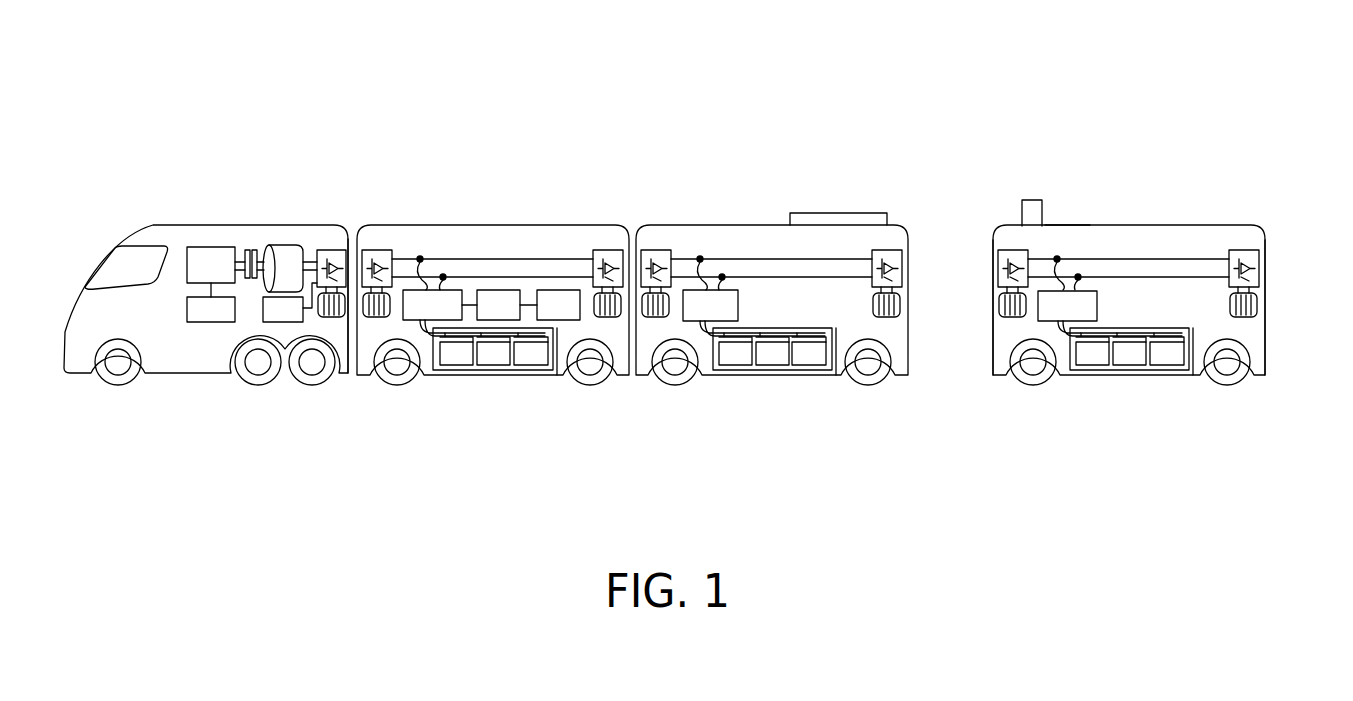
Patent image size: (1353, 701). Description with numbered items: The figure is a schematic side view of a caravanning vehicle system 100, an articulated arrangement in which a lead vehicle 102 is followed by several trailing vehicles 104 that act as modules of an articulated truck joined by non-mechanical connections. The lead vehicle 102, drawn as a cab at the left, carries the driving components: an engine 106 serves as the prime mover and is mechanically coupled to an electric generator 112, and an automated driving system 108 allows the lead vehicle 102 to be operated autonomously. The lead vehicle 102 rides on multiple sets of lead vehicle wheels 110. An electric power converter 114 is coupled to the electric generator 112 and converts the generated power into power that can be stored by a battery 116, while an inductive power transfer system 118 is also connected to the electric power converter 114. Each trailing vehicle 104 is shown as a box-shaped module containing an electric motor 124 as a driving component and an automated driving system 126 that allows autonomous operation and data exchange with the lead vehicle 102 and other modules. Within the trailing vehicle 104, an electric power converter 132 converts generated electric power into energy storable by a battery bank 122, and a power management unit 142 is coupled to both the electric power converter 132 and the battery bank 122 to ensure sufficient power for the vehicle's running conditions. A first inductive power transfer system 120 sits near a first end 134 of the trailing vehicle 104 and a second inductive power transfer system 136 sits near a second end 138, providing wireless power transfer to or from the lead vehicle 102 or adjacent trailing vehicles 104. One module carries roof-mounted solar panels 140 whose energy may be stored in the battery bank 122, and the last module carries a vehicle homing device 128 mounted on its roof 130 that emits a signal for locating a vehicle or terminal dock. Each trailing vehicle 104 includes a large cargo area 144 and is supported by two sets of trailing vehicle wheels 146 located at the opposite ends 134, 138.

The caravanning vehicle system 100 is at (88, 70).
The lead vehicle 102 is at (173, 225).
The trailing vehicle 104 is at (481, 225).
The engine 106 is at (213, 258).
The automated driving system 108 is at (200, 322).
The lead vehicle wheels 110 is at (120, 386).
The electric generator 112 is at (285, 245).
The electric power converter 114 is at (337, 250).
The battery 116 is at (280, 312).
The inductive power transfer system 118 is at (327, 316).
The first inductive power transfer system 120 is at (380, 316).
The battery bank 122 is at (482, 370).
The electric motor 124 is at (512, 300).
The automated driving system 126 is at (555, 300).
The vehicle homing device 128 is at (1032, 200).
The roof 130 is at (1067, 226).
The electric power converter 132 is at (376, 250).
The first end 134 is at (982, 222).
The second inductive power transfer system 136 is at (1259, 304).
The second end 138 is at (1281, 225).
The roof-mounted solar panels 140 is at (829, 213).
The power management unit 142 is at (432, 298).
The cargo area 144 is at (1128, 308).
The trailing vehicle wheels 146 is at (588, 386).